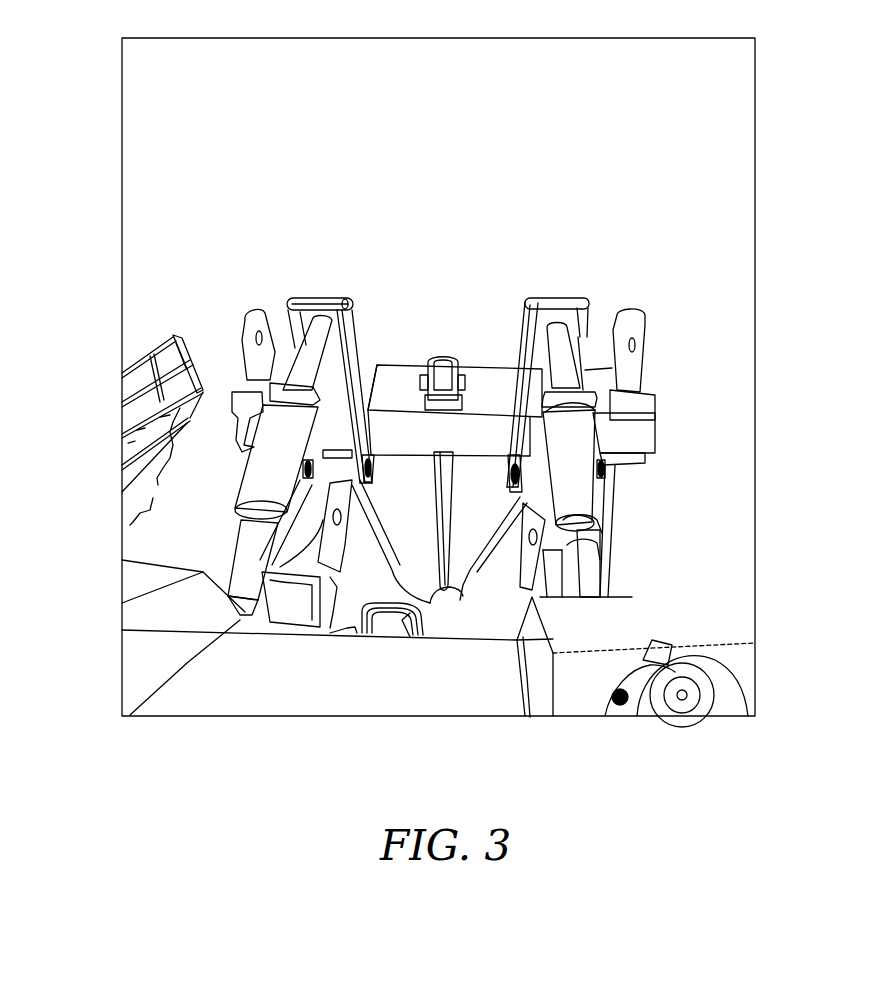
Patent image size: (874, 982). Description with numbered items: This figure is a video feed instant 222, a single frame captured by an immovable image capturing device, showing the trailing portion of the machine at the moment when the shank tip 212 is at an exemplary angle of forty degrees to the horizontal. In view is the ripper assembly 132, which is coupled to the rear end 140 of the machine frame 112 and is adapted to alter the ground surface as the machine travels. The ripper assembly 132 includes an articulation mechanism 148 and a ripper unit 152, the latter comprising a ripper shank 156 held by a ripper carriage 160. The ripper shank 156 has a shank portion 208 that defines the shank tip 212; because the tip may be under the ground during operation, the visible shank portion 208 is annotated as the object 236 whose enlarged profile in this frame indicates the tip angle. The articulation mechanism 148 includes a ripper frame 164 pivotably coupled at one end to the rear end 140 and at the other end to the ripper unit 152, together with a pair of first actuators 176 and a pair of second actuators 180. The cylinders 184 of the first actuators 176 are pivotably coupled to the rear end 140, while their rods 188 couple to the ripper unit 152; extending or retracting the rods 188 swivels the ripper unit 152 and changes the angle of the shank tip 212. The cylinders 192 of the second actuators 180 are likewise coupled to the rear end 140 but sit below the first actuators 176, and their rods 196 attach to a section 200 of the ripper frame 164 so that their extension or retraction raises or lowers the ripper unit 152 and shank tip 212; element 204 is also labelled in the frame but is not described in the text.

The video feed instant 222 is at (762, 91).
The ripper assembly 132 is at (695, 185).
The rods 188 is at (244, 333).
The first actuators 176 is at (243, 418).
The cylinders 184 is at (240, 465).
The articulation mechanism 148 is at (600, 433).
The ripper carriage 160 is at (398, 362).
The ripper unit 152 is at (487, 362).
The object 236 is at (433, 507).
The shank portion 208 is at (460, 494).
The ripper shank 156 is at (433, 574).
The ripper frame 164 is at (462, 570).
The hose loop 204 is at (412, 637).
The section 200 is at (233, 550).
The cylinders 192 is at (243, 607).
The second actuators 180 is at (243, 613).
The rods 196 is at (315, 637).
The rear end 140 is at (355, 636).
The frame 112 is at (447, 638).
The shank tip 212 is at (437, 594).